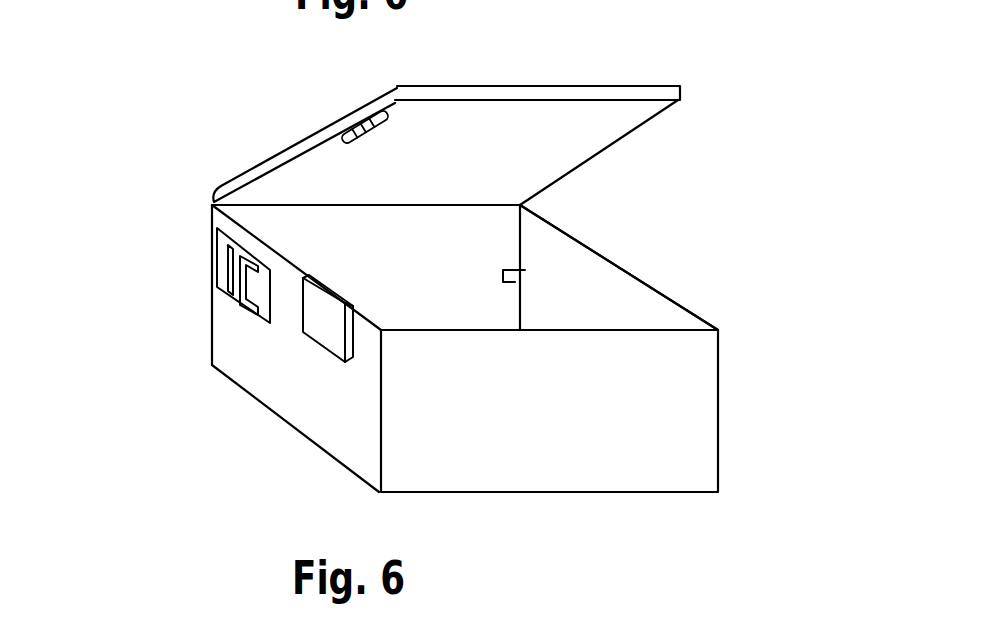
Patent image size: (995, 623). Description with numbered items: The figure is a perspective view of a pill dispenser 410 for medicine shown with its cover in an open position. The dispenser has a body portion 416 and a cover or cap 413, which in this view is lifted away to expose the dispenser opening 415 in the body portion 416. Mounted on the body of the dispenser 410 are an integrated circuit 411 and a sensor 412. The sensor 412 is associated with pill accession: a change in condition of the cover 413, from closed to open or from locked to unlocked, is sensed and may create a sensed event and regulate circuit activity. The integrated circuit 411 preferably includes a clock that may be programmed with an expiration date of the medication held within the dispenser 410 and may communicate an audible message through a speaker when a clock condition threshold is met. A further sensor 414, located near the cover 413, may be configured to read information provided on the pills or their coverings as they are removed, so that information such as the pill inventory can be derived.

The dispenser 410 is at (142, 128).
The integrated circuit 411 is at (236, 293).
The sensor 412 is at (324, 339).
The cover 413 is at (427, 84).
The sensor 414 is at (373, 134).
The dispenser opening 415 is at (523, 268).
The body portion 416 is at (613, 261).